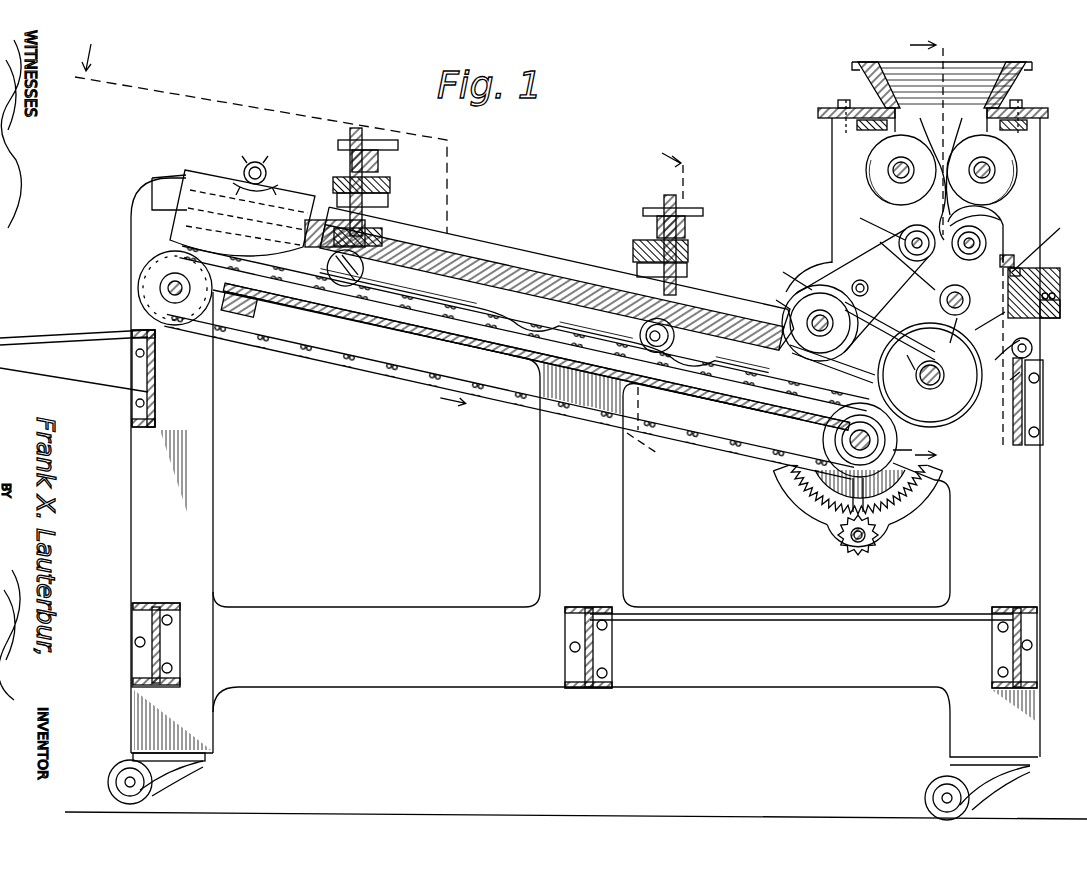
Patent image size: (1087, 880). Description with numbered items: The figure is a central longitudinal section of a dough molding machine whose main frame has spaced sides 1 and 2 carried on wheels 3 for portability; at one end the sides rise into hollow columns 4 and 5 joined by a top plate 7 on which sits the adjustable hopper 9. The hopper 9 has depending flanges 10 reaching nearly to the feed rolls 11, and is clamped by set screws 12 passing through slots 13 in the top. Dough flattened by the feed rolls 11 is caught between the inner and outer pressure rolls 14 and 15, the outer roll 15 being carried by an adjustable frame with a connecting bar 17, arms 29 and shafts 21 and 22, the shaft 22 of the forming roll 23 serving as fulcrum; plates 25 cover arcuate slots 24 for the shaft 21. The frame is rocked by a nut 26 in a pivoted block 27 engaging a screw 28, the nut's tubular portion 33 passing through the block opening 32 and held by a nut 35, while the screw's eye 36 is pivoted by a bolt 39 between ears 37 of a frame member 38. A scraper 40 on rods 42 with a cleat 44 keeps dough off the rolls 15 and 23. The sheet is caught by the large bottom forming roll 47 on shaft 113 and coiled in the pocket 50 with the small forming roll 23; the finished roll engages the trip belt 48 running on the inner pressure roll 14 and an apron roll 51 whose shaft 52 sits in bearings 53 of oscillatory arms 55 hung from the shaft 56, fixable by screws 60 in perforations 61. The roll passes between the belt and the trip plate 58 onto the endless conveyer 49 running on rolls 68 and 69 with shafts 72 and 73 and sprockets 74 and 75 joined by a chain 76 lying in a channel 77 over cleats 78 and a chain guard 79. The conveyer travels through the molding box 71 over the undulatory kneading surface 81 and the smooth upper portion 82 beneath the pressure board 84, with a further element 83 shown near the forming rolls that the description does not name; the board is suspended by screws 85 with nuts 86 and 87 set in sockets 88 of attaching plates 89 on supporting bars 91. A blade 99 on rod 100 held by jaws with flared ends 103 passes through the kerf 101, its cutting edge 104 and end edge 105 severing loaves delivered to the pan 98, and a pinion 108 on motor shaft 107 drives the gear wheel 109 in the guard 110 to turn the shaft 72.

The side of main frame 1 is at (585, 441).
The side of main frame 2 is at (251, 138).
The rollers or wheels 3 is at (118, 774).
The vertical column 4 is at (818, 160).
The vertical column 5 is at (660, 301).
The top plate 7 is at (818, 113).
The hopper 9 is at (893, 66).
The depending vertical flanges 10 is at (924, 142).
The upper transverse feed rolls 11 is at (880, 172).
The set screws 12 is at (857, 125).
The slots 13 is at (842, 100).
The inner pressure roll 14 is at (890, 248).
The outer pressure roll 15 is at (917, 237).
The transverse bar of adjustable frame 17 is at (1018, 250).
The shaft of outer pressure roll 21 is at (985, 235).
The shaft of forming roll 22 is at (990, 330).
The forming roll 23 is at (949, 341).
The arcuate slots 24 is at (1003, 248).
The plates 25 is at (1000, 216).
The nut 26 is at (1084, 284).
The pivoted block 27 is at (1062, 314).
The screw 28 is at (1046, 250).
The outwardly projecting arms 29 is at (1003, 363).
The central opening 32 is at (1068, 297).
The tubular portion 33 is at (1054, 299).
The nut 35 is at (1032, 347).
The eye 36 is at (1025, 368).
The ears 37 is at (1012, 382).
The transverse frame member 38 is at (1043, 398).
The bolt 39 is at (1032, 352).
The scraper 40 is at (878, 300).
The rods 42 is at (968, 300).
The transverse cleat 44 is at (1010, 265).
The bottom forming roll 47 is at (930, 375).
The trip belt 48 is at (893, 260).
The endless traveling conveyer 49 is at (735, 455).
The pocket 50 is at (875, 312).
The lower apron roll 51 is at (792, 305).
The transverse shaft 52 is at (790, 318).
The adjustable bearings 53 is at (812, 326).
The oscillatory arms 55 is at (868, 236).
The shaft of inner pressure roll 56 is at (881, 219).
The trip plate 58 is at (903, 373).
The screws 60 is at (866, 277).
The perforations 61 is at (816, 278).
The inner conveyer roll 68 is at (853, 462).
The outer conveyer roll 69 is at (180, 298).
The molding or shaping box 71 is at (543, 326).
The inner transverse shaft 72 is at (848, 441).
The outer transverse shaft 73 is at (163, 282).
The sprocket wheel 74 is at (873, 462).
The sprocket wheel 75 is at (170, 268).
The sprocket chain 76 is at (415, 334).
The central channel 77 is at (480, 342).
The transverse cleats 78 is at (520, 357).
The chain guard 79 is at (330, 312).
The undulatory kneading surface 81 is at (240, 310).
The upper smooth portion of bottom 82 is at (363, 265).
The shaft 83 is at (832, 363).
The pressure board 84 is at (505, 268).
The screw 85 is at (390, 113).
The upper nut 86 is at (398, 158).
The lower nut 87 is at (388, 202).
The socket 88 is at (372, 238).
The attaching plate 89 is at (345, 228).
The transverse supporting bar 91 is at (390, 185).
The receiving pan 98 is at (92, 343).
The cutter blade 99 is at (193, 178).
The transverse rod 100 is at (246, 176).
The kerf 101 is at (152, 188).
The upper ends of jaws 103 is at (260, 165).
The inclined cutting edge 104 is at (278, 247).
The inner end edge of blade 105 is at (306, 214).
The motor shaft 107 is at (870, 548).
The spur pinion 108 is at (846, 555).
The spur gear wheel 109 is at (822, 508).
The wheel guard 110 is at (790, 492).
The shaft of bottom forming roll 113 is at (949, 376).